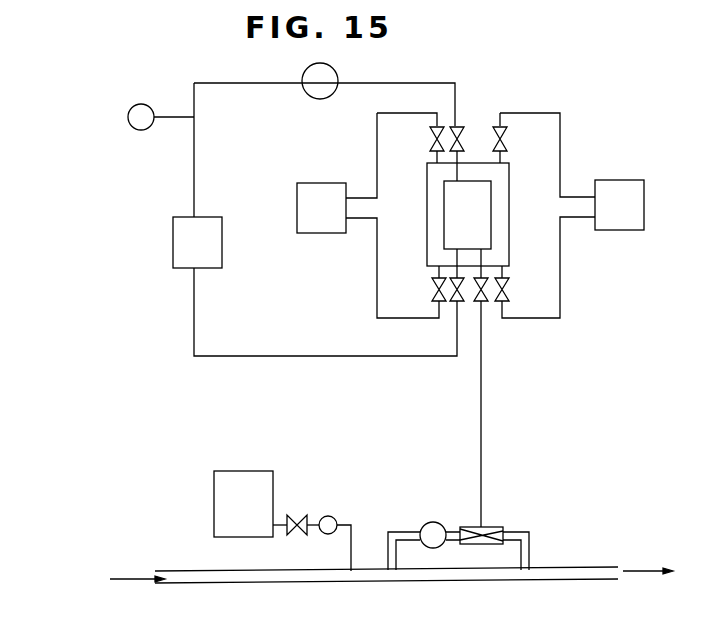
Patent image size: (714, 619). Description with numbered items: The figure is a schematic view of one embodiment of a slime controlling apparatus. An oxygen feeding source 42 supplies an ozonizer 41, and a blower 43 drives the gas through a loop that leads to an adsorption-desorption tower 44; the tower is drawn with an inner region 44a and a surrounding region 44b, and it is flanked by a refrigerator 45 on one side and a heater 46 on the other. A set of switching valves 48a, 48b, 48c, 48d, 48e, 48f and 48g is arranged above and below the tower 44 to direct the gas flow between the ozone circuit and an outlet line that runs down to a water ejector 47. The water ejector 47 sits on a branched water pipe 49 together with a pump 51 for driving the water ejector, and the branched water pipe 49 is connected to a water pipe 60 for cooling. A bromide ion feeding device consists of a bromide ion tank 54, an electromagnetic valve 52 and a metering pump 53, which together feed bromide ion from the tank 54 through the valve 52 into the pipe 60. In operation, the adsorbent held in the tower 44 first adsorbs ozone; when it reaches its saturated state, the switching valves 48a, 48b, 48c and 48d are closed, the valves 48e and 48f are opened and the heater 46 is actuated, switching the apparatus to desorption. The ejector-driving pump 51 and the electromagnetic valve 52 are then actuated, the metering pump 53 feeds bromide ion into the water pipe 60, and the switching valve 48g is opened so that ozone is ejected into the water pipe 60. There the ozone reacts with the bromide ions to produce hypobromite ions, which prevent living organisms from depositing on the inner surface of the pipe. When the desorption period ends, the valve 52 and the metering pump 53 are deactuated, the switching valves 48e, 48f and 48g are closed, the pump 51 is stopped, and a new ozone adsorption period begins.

The ozonizer 41 is at (213, 218).
The oxygen feeding source 42 is at (132, 106).
The blower 43 is at (333, 68).
The adsorption-desorption tower 44 is at (511, 207).
The inner chamber 44a is at (444, 195).
The outer chamber 44b is at (427, 241).
The refrigerator 45 is at (303, 183).
The heater 46 is at (618, 180).
The water ejector 47 is at (492, 527).
The switching valve 48a is at (431, 141).
The switching valve 48b is at (433, 291).
The switching valve 48c is at (458, 126).
The switching valve 48d is at (455, 304).
The switching valve 48e is at (502, 126).
The switching valve 48f is at (508, 291).
The switching valve 48g is at (482, 304).
The branched water pipe 49 is at (403, 532).
The pump for driving the water ejector 51 is at (432, 522).
The electromagnetic valve 52 is at (290, 515).
The metering pump 53 is at (331, 516).
The bromide ion tank 54 is at (245, 471).
The water pipe for cooling 60 is at (583, 567).